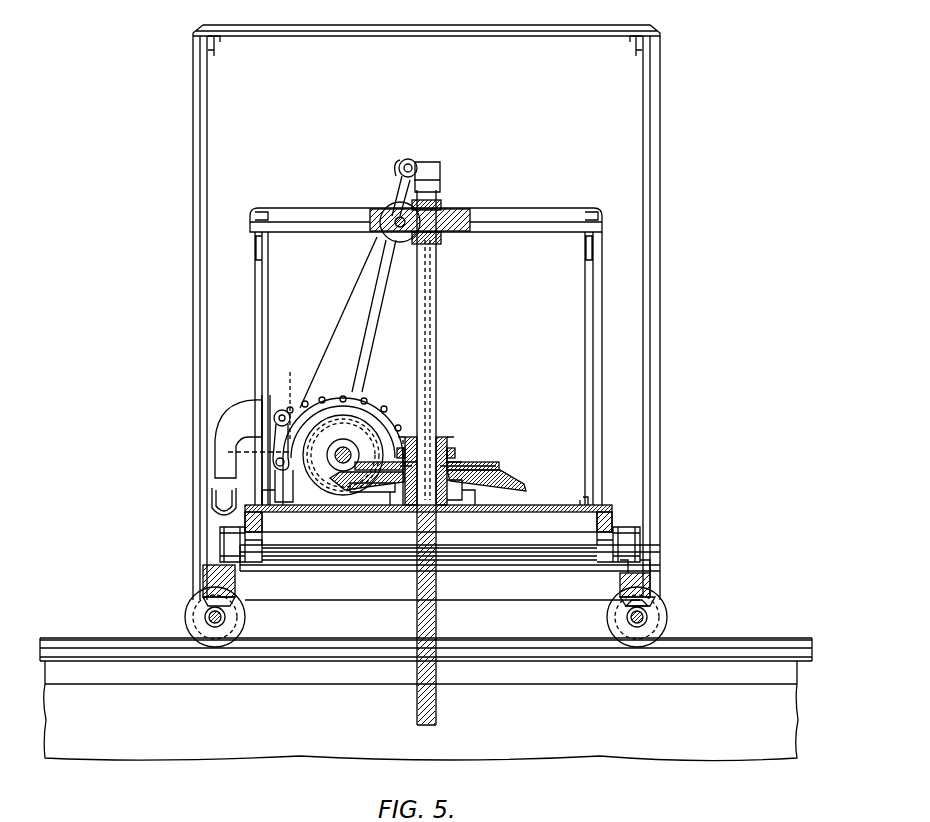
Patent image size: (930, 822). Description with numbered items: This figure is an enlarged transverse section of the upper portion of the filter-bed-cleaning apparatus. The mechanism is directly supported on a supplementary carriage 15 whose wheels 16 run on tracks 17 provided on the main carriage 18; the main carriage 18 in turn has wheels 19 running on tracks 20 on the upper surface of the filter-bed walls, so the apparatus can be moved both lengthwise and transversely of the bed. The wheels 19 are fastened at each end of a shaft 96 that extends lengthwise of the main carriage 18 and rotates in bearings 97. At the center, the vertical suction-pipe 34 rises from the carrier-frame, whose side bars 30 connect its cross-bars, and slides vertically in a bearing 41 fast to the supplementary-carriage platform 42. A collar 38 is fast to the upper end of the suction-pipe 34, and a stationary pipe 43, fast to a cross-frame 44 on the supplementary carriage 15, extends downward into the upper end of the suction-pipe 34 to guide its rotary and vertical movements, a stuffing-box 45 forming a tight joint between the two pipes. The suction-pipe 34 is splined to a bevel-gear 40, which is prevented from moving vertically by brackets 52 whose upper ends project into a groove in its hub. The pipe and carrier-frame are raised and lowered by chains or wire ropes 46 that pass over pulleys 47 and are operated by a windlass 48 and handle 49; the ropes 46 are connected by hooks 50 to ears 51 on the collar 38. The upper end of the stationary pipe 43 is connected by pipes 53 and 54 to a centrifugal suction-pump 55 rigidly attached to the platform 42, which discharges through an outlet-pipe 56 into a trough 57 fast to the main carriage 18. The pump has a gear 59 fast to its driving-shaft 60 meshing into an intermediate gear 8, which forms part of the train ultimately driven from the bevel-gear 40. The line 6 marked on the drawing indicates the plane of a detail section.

The section line 6 is at (500, 458).
The intermediate gear 8 is at (362, 498).
The supplementary carriage 15 is at (598, 482).
The wheels 16 is at (226, 546).
The tracks 17 is at (650, 583).
The main carriage 18 is at (658, 617).
The wheels 19 is at (213, 648).
The tracks 20 is at (742, 640).
The side bars 30 is at (312, 552).
The vertical suction-pipe 34 is at (438, 702).
The collar 38 is at (462, 455).
The bevel-gear 40 is at (524, 484).
The bearing 41 is at (445, 556).
The supplementary-carriage platform 42 is at (428, 514).
The stationary pipe 43 is at (440, 366).
The cross-frame 44 is at (520, 224).
The stuffing-box 45 is at (450, 440).
The chains or wire ropes 46 is at (336, 330).
The pulleys 47 is at (404, 250).
The windlass 48 is at (294, 401).
The handle 49 is at (279, 457).
The hooks 50 is at (343, 455).
The ears 51 is at (455, 450).
The brackets 52 is at (464, 494).
The pipe 53 is at (420, 170).
The pipe 54 is at (372, 342).
The centrifugal suction-pump 55 is at (372, 406).
The outlet-pipe 56 is at (220, 458).
The trough 57 is at (210, 503).
The gear 59 is at (408, 416).
The driving-shaft 60 is at (432, 422).
The shaft 96 is at (632, 625).
The bearing 97 is at (628, 610).